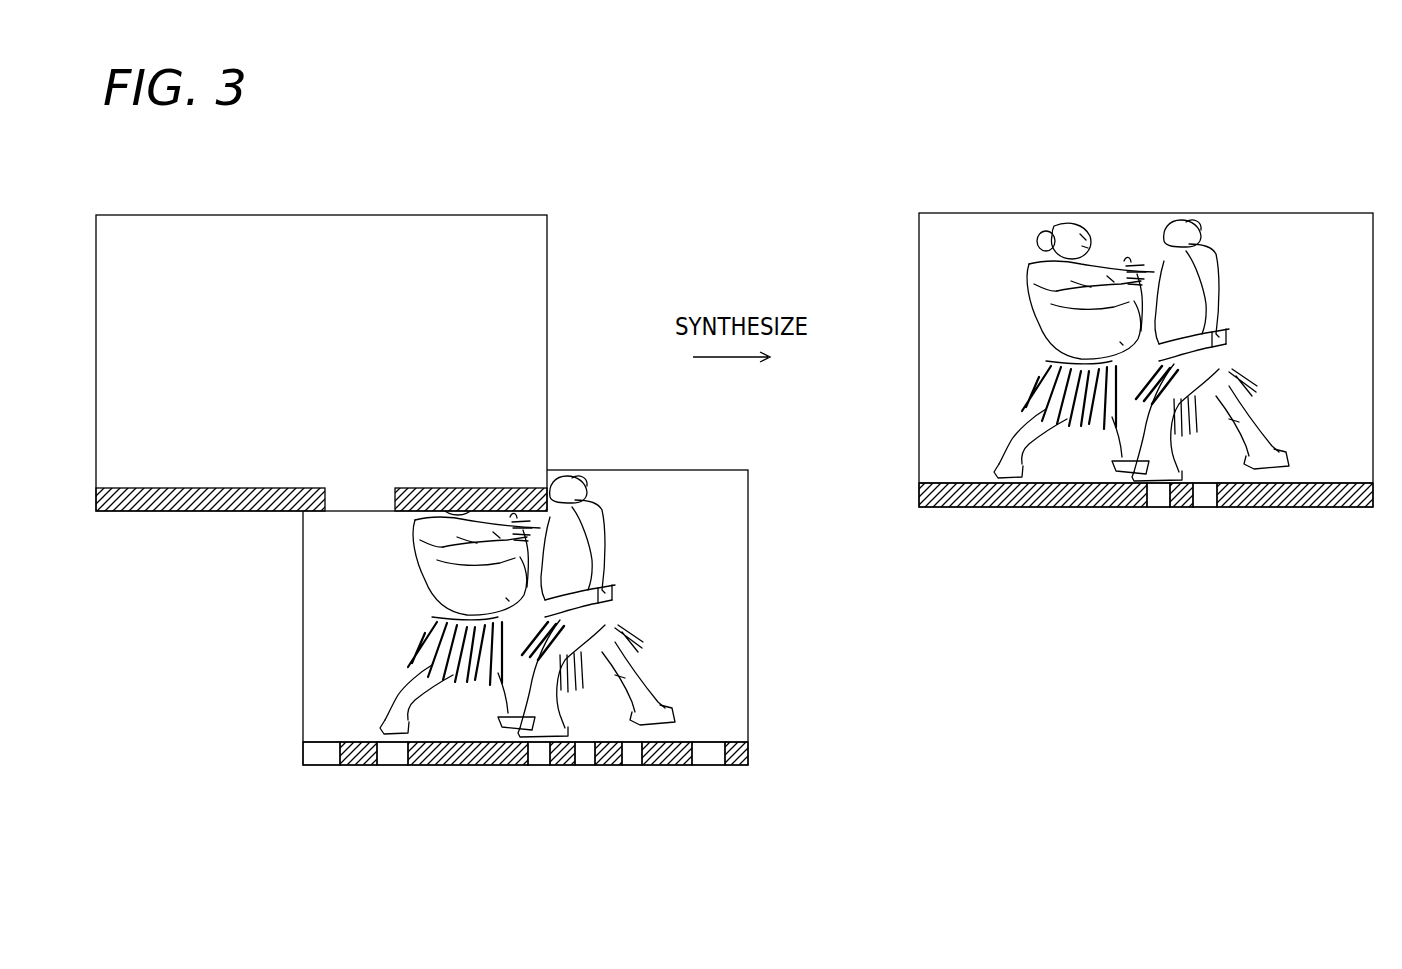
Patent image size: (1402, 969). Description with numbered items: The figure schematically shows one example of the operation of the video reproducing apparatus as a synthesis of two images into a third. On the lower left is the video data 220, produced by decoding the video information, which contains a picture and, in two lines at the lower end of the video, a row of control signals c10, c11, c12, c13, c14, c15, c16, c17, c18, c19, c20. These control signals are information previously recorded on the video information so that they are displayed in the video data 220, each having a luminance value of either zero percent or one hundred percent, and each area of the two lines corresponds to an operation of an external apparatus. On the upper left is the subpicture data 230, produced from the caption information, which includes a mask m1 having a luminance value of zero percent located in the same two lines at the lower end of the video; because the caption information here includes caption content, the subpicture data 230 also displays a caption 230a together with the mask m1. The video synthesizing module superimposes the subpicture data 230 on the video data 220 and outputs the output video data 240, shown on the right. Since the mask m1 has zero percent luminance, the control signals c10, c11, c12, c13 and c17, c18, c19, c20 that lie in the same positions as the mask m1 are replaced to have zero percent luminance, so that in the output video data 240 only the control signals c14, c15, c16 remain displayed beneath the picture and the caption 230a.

The video data 220 is at (750, 614).
The subpicture data 230 is at (203, 215).
The caption 230a is at (527, 258).
The output video data 240 is at (1020, 212).
The mask m1 is at (193, 512).
The control signal c10 is at (310, 758).
The control signal c11 is at (357, 763).
The control signal c12 is at (405, 762).
The control signal c13 is at (473, 770).
The control signal c14 is at (537, 758).
The control signal c15 is at (550, 765).
The control signal c16 is at (593, 758).
The control signal c17 is at (607, 763).
The control signal c18 is at (668, 770).
The control signal c19 is at (713, 758).
The control signal c20 is at (740, 763).